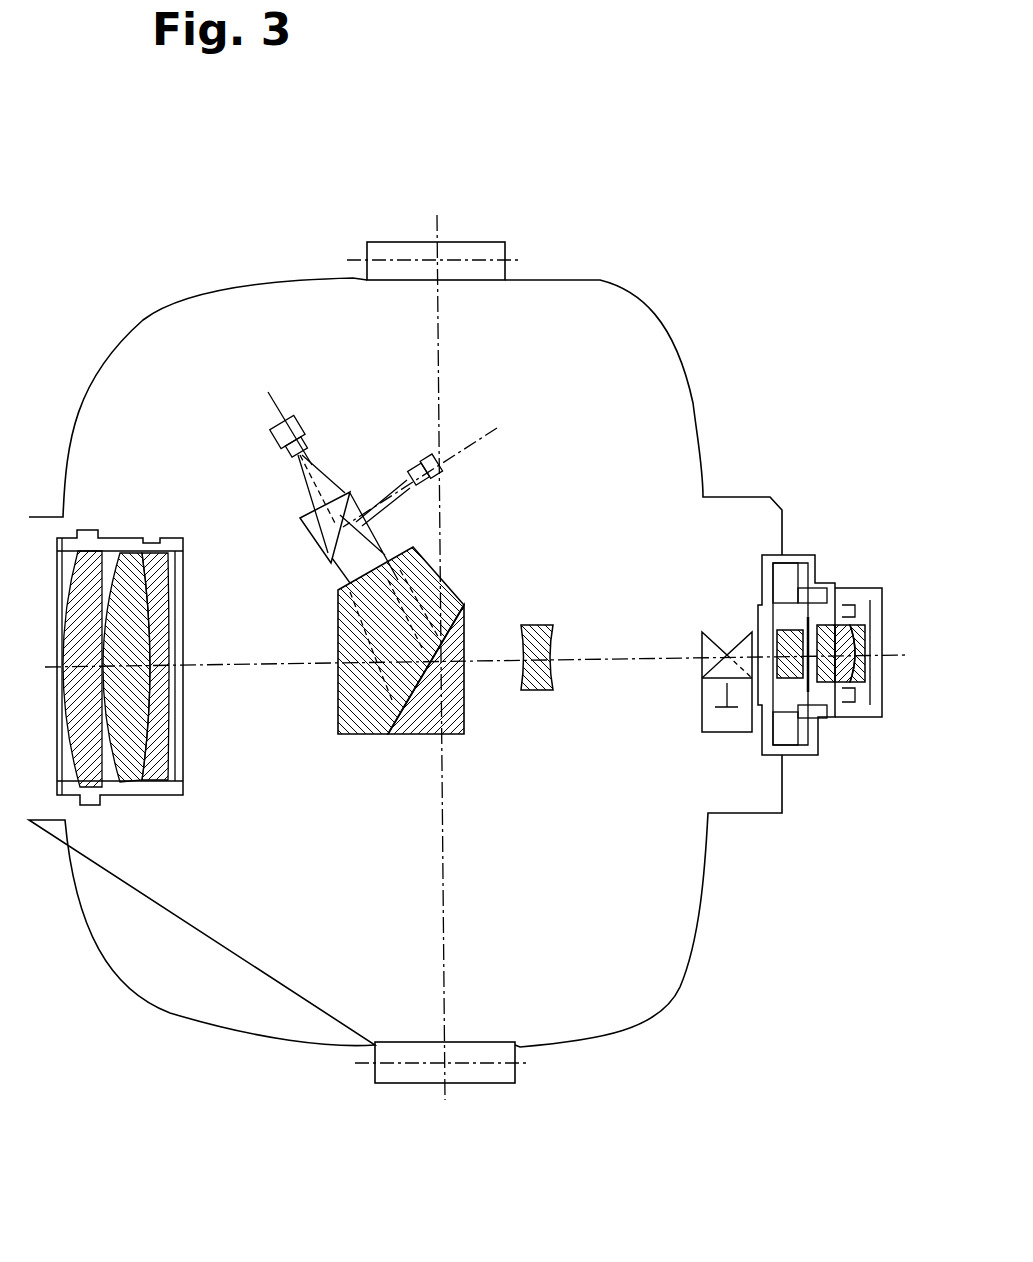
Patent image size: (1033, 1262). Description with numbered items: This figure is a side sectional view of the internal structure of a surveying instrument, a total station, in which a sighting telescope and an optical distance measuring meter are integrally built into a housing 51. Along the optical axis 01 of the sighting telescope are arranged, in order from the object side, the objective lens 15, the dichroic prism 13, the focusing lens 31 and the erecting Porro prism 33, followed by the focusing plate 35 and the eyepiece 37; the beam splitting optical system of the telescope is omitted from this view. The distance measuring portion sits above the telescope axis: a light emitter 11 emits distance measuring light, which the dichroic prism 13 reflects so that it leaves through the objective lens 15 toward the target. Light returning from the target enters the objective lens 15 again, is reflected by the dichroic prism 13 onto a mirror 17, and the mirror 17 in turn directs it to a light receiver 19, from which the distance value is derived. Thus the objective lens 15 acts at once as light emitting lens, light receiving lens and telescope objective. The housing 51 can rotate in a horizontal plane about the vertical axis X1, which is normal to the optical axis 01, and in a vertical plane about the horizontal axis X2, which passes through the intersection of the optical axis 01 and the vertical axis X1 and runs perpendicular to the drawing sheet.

The optical axis 01 is at (280, 663).
The light emitter 11 is at (305, 427).
The dichroic prism 13 is at (412, 734).
The objective lens 15 is at (148, 787).
The mirror 17 is at (342, 490).
The light receiver 19 is at (415, 460).
The focusing lens 31 is at (533, 690).
The Porro prism 33 is at (723, 637).
The focusing plate 35 is at (788, 605).
The eyepiece 37 is at (862, 622).
The housing 51 is at (693, 935).
The vertical axis X1 is at (443, 920).
The horizontal axis X2 is at (453, 660).